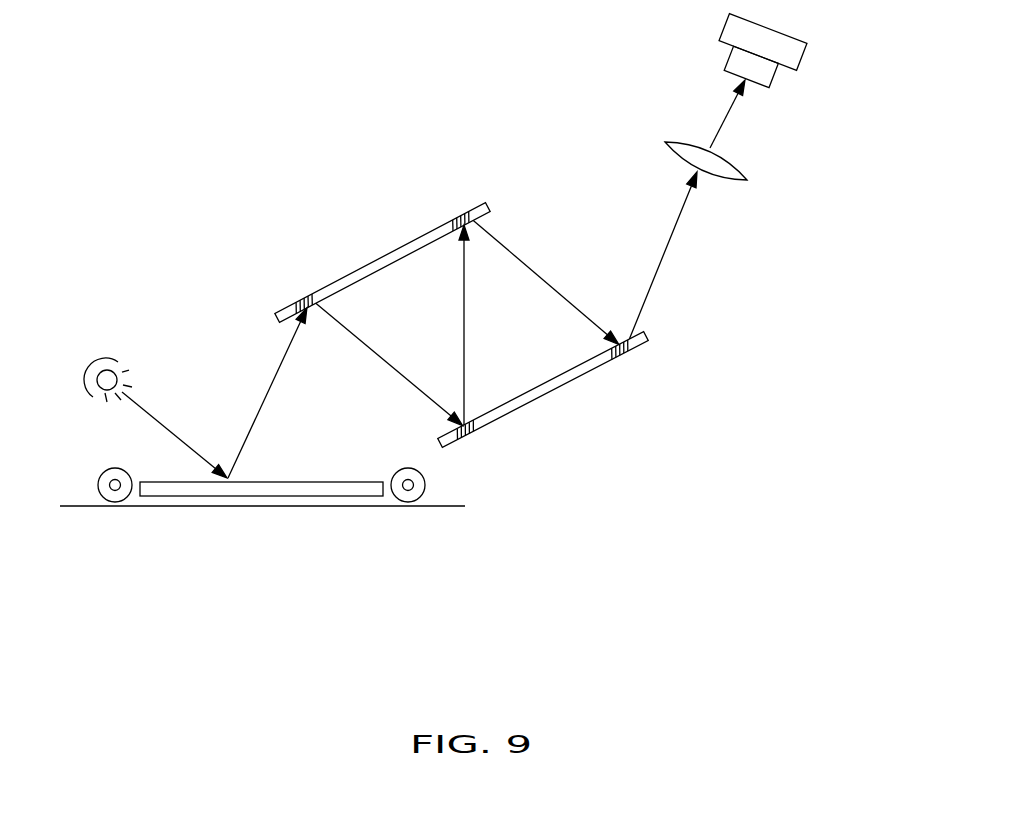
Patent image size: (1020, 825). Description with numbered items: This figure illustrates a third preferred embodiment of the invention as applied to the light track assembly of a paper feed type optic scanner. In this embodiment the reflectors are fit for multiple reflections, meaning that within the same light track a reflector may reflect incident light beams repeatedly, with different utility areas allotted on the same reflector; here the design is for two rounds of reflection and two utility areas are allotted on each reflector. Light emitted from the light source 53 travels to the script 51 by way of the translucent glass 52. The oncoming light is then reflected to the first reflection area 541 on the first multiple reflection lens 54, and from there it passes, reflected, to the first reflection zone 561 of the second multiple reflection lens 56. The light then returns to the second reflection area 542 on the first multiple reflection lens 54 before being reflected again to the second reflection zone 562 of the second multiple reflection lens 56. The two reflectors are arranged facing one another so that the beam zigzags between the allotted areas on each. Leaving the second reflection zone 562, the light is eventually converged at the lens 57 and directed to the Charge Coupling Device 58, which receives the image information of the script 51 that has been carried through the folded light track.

The script 51 is at (437, 507).
The translucent glass 52 is at (303, 480).
The light source 53 is at (85, 373).
The first multiple reflection lens 54 is at (385, 260).
The first reflection area 541 is at (295, 303).
The second reflection area 542 is at (462, 213).
The second multiple reflection lens 56 is at (558, 382).
The first reflection zone 561 is at (470, 437).
The second reflection zone 562 is at (625, 350).
The lens 57 is at (730, 168).
The Charge Coupling Device 58 is at (805, 50).